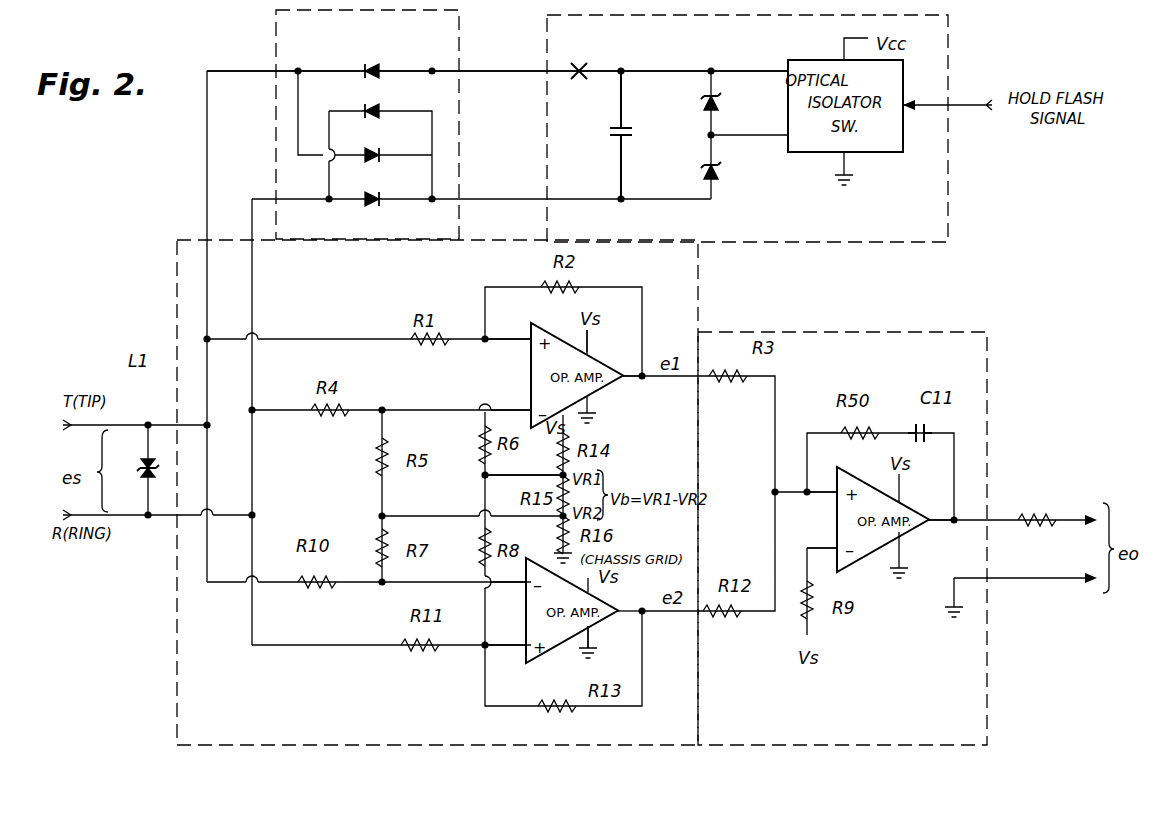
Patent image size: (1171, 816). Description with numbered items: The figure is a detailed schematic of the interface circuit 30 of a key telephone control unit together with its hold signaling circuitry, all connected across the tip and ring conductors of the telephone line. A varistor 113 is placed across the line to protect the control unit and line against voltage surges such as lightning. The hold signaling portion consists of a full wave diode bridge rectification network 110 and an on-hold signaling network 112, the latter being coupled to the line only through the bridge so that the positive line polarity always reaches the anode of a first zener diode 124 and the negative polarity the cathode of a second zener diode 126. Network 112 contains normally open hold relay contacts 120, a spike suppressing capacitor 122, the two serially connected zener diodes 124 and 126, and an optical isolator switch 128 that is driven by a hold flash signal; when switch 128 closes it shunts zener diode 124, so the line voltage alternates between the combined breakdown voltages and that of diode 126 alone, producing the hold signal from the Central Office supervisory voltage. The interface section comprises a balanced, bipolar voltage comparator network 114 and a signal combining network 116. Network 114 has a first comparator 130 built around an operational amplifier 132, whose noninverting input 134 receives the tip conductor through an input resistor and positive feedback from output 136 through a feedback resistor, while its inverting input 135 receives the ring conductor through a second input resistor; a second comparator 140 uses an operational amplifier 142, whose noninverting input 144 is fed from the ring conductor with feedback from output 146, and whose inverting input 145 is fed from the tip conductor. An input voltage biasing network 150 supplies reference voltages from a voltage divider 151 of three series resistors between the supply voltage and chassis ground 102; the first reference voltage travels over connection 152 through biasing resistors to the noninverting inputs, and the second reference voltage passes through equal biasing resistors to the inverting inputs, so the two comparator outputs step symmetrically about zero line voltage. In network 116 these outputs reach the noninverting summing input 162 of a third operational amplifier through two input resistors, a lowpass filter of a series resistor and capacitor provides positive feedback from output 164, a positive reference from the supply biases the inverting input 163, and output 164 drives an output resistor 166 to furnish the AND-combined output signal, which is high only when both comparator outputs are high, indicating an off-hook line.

The interface circuit 30 is at (1017, 250).
The chassis ground 102 is at (946, 600).
The full wave diode bridge rectification network 110 is at (462, 52).
The on-hold signaling network 112 is at (952, 48).
The varistor 113 is at (140, 466).
The balanced, bipolar voltage comparator network 114 is at (700, 292).
The signal combining network 116 is at (990, 383).
The hold relay contacts 120 is at (583, 62).
The spike suppressing capacitor 122 is at (608, 140).
The zener diode 124 is at (722, 102).
The zener diode 126 is at (722, 171).
The optical isolator switch 128 is at (886, 154).
The first comparator 130 is at (464, 288).
The operational amplifier 132 is at (556, 334).
The noninverting input 134 is at (506, 334).
The inverting input 135 is at (501, 407).
The output 136 is at (627, 380).
The second comparator 140 is at (458, 677).
The operational amplifier 142 is at (546, 660).
The noninverting input 144 is at (500, 649).
The inverting input 145 is at (500, 585).
The output 146 is at (630, 606).
The input voltage biasing network 150 is at (354, 488).
The voltage divider 151 is at (606, 461).
The connection 152 is at (505, 475).
The noninverting summing input 162 is at (820, 503).
The inverting input 163 is at (826, 551).
The output 164 is at (967, 526).
The output resistor 166 is at (1036, 510).